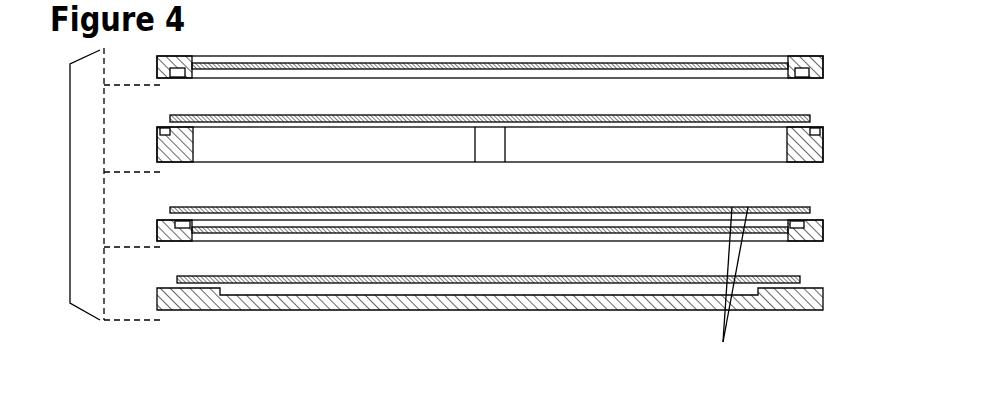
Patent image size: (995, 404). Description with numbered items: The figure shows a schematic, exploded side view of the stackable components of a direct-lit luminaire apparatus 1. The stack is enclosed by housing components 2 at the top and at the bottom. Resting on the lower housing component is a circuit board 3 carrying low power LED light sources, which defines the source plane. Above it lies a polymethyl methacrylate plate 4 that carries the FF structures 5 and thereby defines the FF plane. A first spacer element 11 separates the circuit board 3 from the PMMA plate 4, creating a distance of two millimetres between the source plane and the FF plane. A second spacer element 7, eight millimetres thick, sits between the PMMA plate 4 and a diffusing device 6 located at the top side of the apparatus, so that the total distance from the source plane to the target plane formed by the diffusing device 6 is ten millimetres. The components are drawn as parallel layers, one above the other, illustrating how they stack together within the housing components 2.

The apparatus 1 is at (70, 163).
The housing components 2 is at (823, 58).
The circuit board 3 is at (800, 279).
The polymethyl methacrylate (PMMA) plate 4 is at (810, 209).
The FF structures 5 is at (730, 291).
The diffusing device 6 is at (810, 117).
The second spacer element 7 is at (823, 156).
The first spacer element 11 is at (823, 236).